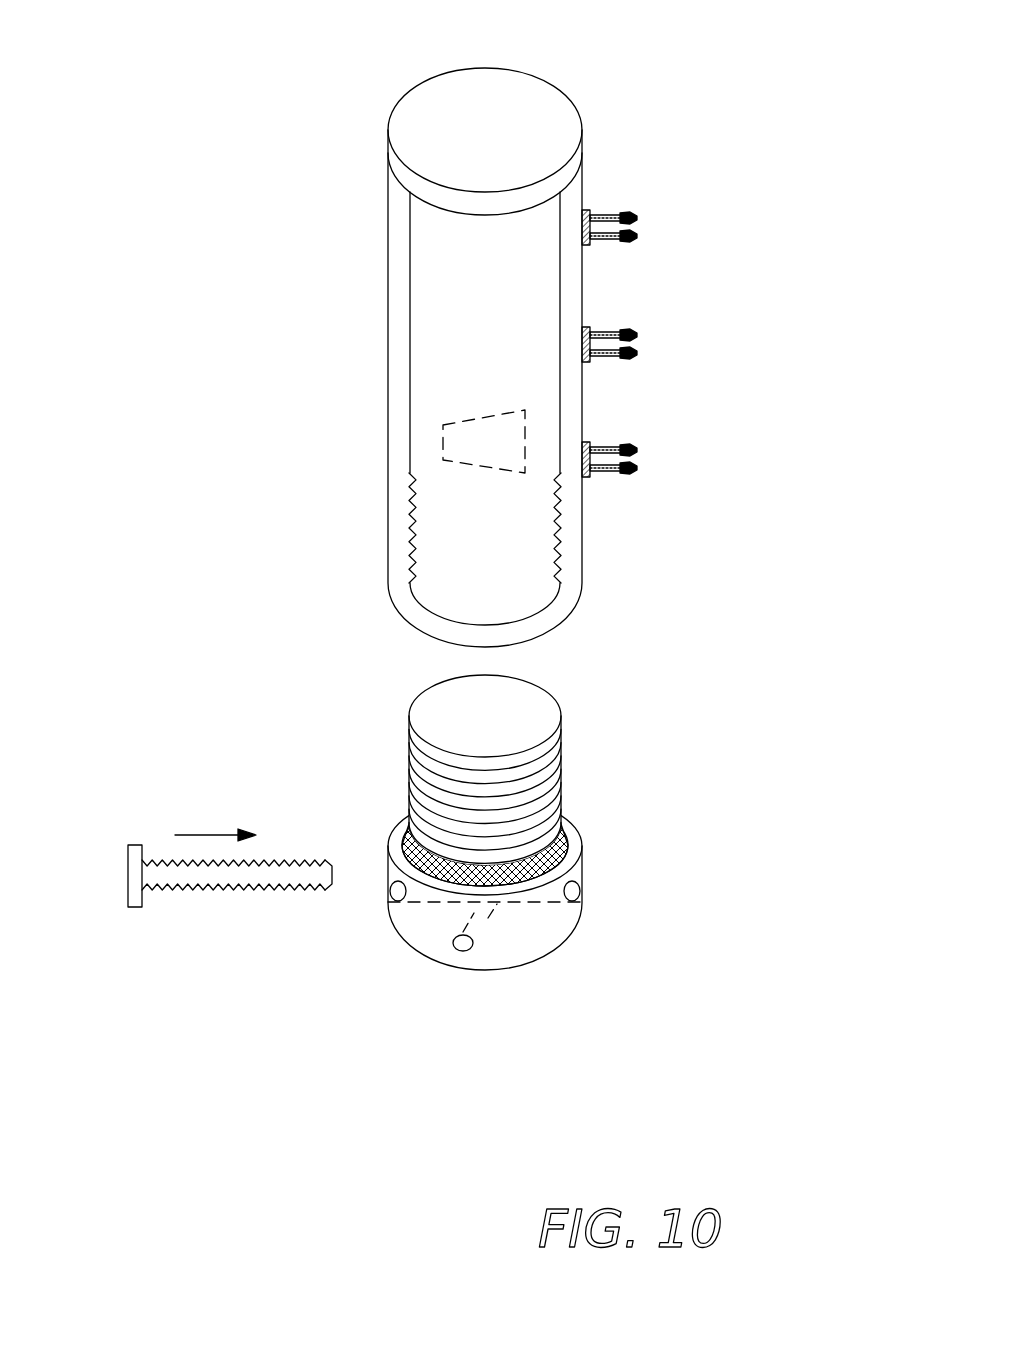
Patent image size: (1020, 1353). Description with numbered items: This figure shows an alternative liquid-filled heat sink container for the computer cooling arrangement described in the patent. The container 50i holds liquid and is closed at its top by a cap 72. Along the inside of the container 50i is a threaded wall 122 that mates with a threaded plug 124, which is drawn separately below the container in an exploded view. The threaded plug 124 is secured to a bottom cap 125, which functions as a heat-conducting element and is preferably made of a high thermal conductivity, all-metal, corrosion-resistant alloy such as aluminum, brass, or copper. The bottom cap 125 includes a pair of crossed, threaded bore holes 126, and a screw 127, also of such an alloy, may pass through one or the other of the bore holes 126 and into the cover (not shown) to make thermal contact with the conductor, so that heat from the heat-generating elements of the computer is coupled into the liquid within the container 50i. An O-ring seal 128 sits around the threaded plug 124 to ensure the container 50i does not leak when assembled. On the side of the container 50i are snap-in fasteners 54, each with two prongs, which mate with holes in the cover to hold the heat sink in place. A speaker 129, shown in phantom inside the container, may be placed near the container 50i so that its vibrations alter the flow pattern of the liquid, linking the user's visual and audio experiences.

The container 50i is at (388, 340).
The cap 72 is at (478, 97).
The threaded wall 122 is at (552, 558).
The speaker 129 is at (470, 425).
The snap-in fastener 54 is at (648, 452).
The bottom cap 125 is at (410, 948).
The O-ring seal 128 is at (565, 850).
The threaded plug 124 is at (517, 717).
The threaded bore holes 126 is at (540, 905).
The screw 127 is at (235, 888).